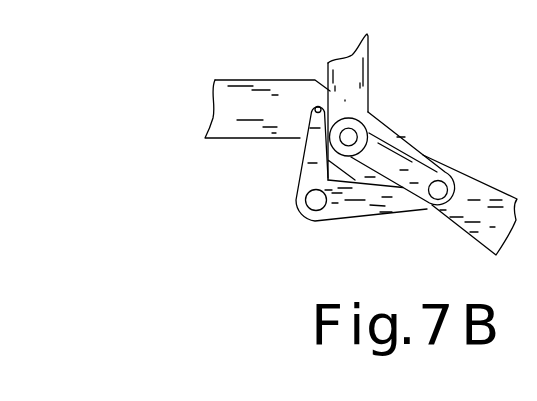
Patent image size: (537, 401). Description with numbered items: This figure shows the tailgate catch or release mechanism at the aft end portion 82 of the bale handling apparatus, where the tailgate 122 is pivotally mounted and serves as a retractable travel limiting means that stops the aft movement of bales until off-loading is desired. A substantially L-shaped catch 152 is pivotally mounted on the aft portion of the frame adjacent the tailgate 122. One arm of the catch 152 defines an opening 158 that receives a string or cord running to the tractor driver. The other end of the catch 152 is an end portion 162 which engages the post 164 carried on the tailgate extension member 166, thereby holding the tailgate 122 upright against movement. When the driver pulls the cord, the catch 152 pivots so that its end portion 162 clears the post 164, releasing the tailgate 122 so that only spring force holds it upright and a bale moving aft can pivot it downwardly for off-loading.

The aft end portion 82 is at (268, 88).
The tailgate 122 is at (363, 102).
The catch 152 is at (305, 182).
The opening 158 is at (313, 115).
The end portion 162 is at (387, 208).
The post 164 is at (448, 190).
The tailgate extension member 166 is at (408, 160).